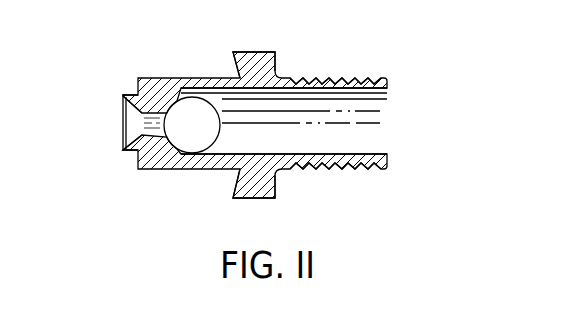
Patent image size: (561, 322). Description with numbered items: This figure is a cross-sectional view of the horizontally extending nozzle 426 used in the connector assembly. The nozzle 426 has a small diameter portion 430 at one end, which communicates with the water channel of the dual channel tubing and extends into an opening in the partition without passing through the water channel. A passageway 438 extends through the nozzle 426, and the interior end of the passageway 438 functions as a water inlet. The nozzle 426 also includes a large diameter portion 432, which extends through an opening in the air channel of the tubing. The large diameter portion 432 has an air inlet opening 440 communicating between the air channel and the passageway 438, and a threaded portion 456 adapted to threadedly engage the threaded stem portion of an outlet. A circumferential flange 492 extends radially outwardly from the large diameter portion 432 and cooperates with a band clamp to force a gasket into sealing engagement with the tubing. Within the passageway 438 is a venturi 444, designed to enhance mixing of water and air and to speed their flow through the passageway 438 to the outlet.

The nozzle 426 is at (289, 64).
The small diameter portion 430 is at (137, 143).
The large diameter portion 432 is at (185, 78).
The passageway 438 is at (377, 135).
The air inlet opening 440 is at (197, 145).
The venturi 444 is at (124, 124).
The threaded portion 456 is at (370, 80).
The circumferential flange 492 is at (250, 52).